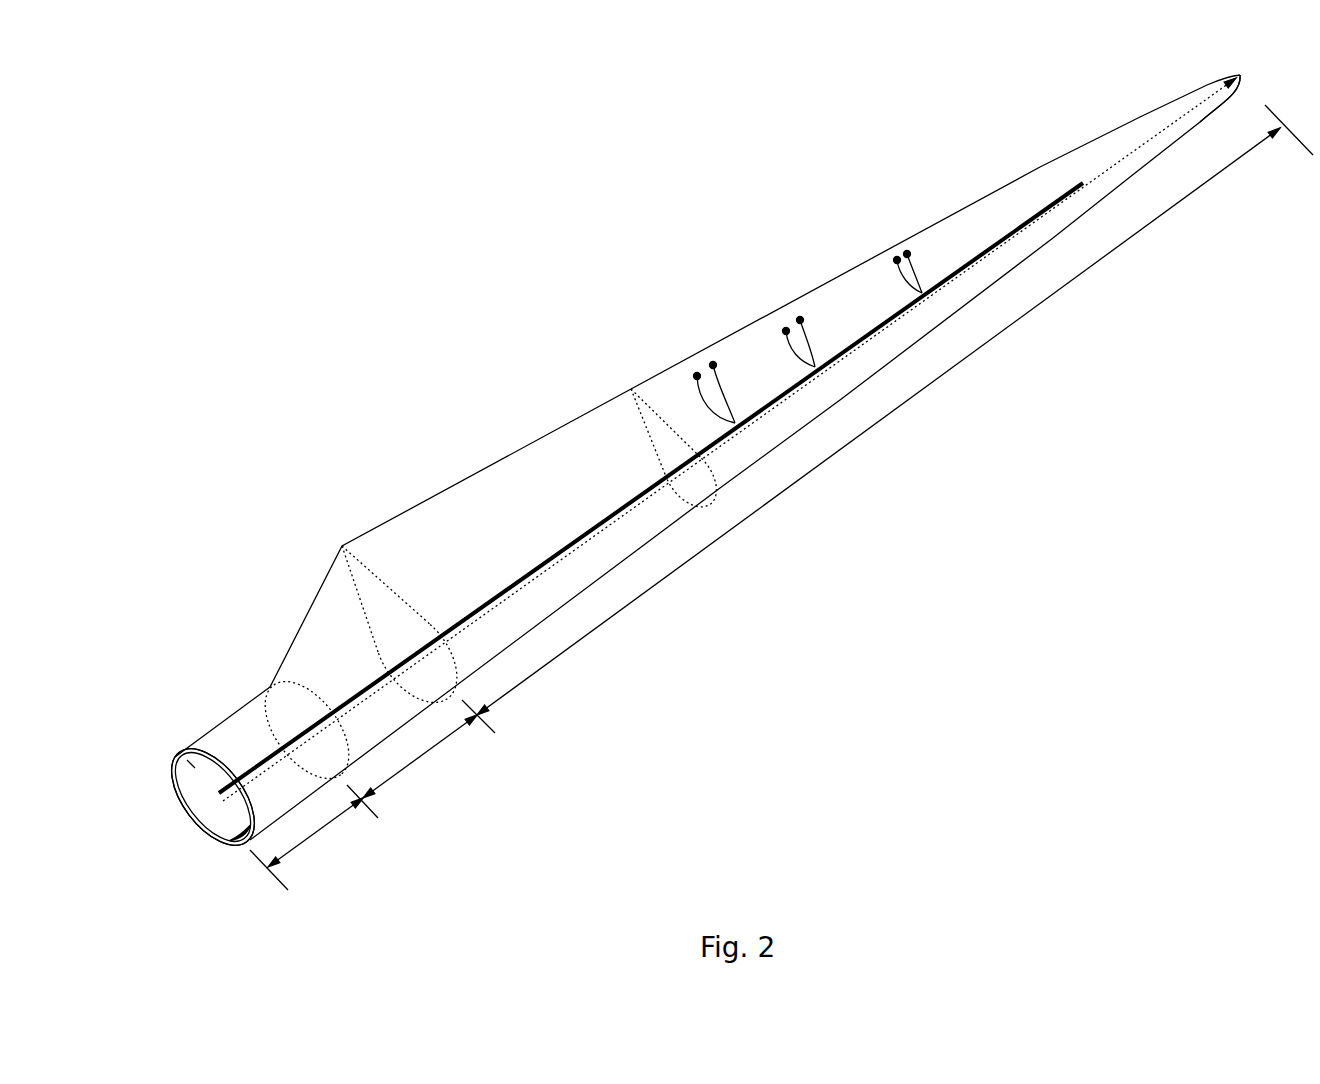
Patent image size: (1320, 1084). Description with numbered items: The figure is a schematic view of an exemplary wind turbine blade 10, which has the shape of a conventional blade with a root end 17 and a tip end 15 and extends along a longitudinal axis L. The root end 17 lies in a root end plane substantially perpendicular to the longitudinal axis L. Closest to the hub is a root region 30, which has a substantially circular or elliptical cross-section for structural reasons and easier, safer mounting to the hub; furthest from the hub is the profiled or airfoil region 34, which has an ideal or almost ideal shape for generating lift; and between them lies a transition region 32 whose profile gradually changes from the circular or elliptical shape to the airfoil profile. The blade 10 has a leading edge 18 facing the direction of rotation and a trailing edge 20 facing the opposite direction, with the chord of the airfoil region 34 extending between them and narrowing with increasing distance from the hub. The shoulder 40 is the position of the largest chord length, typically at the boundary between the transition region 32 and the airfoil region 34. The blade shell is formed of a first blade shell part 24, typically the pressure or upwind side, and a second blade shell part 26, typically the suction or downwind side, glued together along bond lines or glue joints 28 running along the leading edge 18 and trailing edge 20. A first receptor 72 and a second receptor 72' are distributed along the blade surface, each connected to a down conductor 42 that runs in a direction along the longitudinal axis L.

The wind turbine blade 10 is at (517, 313).
The tip end 15 is at (1240, 75).
The root end 17 is at (179, 770).
The leading edge 18 is at (917, 342).
The trailing edge 20 is at (800, 298).
The first blade shell part 24 is at (192, 766).
The second blade shell part 26 is at (227, 838).
The bond lines or glue joints 28 is at (180, 757).
The root region 30 is at (318, 832).
The transition region 32 is at (423, 755).
The airfoil region 34 is at (800, 478).
The shoulder 40 is at (342, 546).
The down conductor 42 is at (477, 608).
The first receptor 72 is at (808, 337).
The second receptor 72' is at (786, 340).
The longitudinal axis L is at (217, 792).